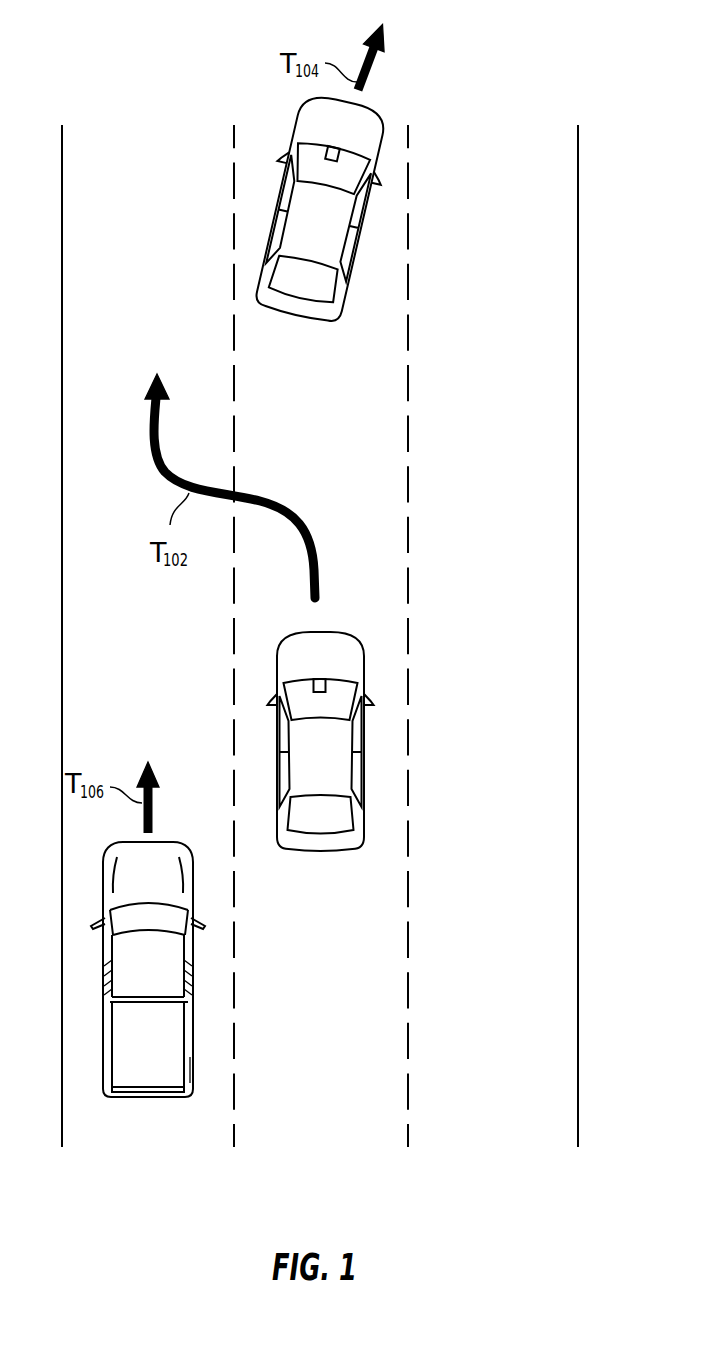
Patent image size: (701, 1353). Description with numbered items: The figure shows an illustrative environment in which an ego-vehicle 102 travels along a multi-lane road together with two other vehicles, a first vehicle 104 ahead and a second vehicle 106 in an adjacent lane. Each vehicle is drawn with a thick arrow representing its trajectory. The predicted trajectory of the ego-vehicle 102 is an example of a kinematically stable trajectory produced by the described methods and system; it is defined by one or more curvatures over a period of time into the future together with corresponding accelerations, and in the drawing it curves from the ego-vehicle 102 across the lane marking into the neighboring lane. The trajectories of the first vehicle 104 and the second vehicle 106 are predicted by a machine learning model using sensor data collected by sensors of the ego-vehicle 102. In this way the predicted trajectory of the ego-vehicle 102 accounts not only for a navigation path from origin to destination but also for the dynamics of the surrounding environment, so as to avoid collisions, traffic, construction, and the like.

The ego-vehicle 102 is at (312, 852).
The first vehicle 104 is at (318, 322).
The second vehicle 106 is at (133, 1097).